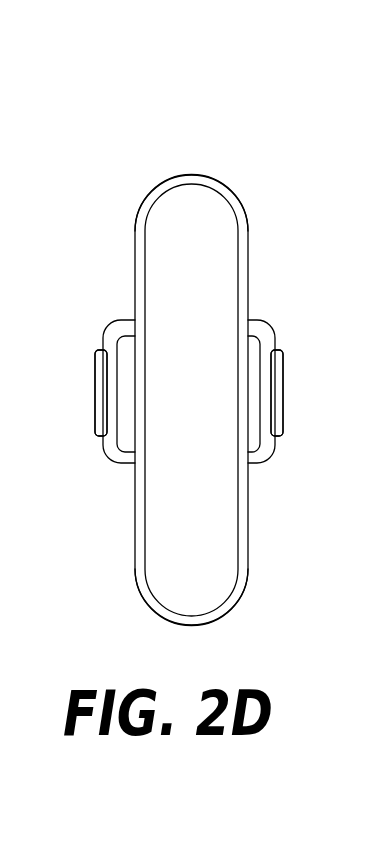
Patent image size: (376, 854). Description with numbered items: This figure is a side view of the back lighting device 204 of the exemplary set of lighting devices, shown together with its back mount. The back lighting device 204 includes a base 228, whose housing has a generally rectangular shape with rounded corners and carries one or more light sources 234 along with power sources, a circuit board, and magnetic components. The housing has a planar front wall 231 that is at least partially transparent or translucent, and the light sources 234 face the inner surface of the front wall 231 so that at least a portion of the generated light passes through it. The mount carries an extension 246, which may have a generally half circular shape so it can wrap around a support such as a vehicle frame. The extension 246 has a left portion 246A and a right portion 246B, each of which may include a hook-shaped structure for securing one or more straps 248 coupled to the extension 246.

The back lighting device 204 is at (190, 136).
The base 228 is at (131, 187).
The light source 234 is at (200, 226).
The front wall 231 is at (160, 543).
The strap 248 is at (262, 330).
The extension 246 is at (277, 393).
The left portion 246A is at (277, 424).
The right portion 246B is at (100, 393).